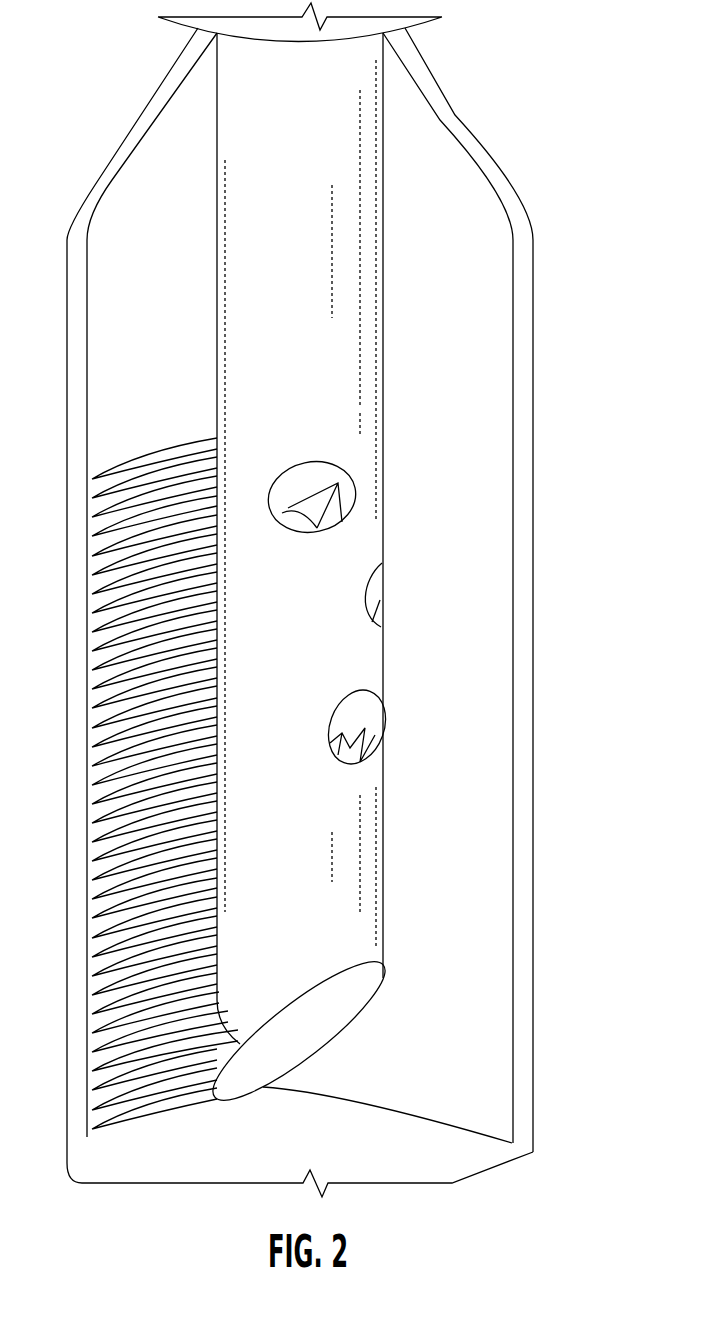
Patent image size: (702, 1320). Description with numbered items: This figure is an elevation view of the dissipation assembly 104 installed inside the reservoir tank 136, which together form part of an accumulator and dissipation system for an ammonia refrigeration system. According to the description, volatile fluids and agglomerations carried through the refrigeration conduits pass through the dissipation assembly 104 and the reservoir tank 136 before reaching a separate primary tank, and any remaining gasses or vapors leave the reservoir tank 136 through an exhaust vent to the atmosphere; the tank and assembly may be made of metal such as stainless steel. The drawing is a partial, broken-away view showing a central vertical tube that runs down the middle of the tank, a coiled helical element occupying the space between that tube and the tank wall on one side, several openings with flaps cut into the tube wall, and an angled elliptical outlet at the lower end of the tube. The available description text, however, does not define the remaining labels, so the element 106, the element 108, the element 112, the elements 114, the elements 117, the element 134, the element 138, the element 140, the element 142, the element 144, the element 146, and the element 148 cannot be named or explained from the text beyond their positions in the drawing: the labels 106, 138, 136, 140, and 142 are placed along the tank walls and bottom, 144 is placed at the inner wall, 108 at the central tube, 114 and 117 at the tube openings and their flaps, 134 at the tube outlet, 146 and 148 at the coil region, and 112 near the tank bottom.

The dissipation assembly 104 is at (470, 200).
The interior chamber 106 is at (178, 282).
The inner tube 108 is at (253, 155).
The bottom region 112 is at (197, 1152).
The openings in tube 114 is at (283, 477).
The flaps of openings 117 is at (348, 462).
The tube outlet opening 134 is at (315, 1037).
The reservoir tank 136 is at (548, 272).
The top shoulder 138 is at (470, 77).
The lower sidewall portion 140 is at (552, 743).
The bottom wall 142 is at (548, 1100).
The inner wall 144 is at (525, 612).
The annular space 146 is at (48, 707).
The helical coil 148 is at (100, 827).